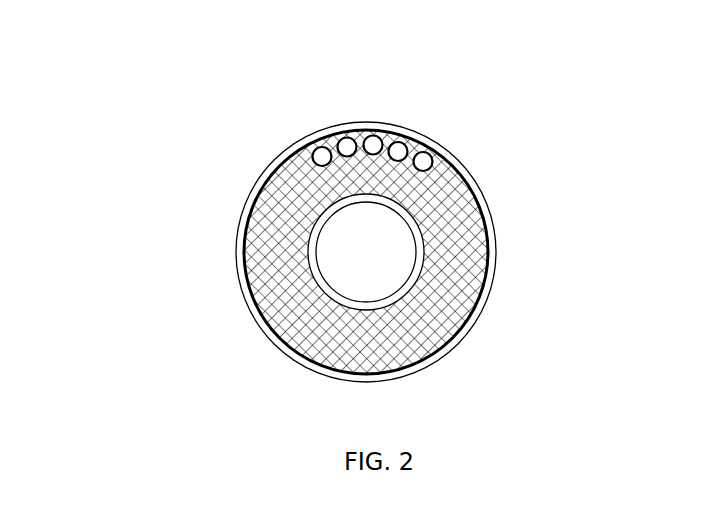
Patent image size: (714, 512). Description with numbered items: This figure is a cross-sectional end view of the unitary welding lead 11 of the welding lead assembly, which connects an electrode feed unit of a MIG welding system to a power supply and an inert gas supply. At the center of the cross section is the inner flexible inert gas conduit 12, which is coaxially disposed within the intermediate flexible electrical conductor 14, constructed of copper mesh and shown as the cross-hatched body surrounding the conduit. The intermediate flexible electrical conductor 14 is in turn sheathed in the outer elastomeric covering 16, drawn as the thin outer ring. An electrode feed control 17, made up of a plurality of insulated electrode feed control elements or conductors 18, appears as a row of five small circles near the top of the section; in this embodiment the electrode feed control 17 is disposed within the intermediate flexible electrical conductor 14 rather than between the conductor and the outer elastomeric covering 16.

The unitary welding lead 11 is at (158, 221).
The inner flexible inert gas conduit 12 is at (403, 284).
The intermediate flexible electrical conductor 14 is at (463, 247).
The outer elastomeric covering 16 is at (480, 317).
The electrode feed control 17 is at (385, 108).
The insulated electrode feed control elements or conductors 18 is at (316, 149).